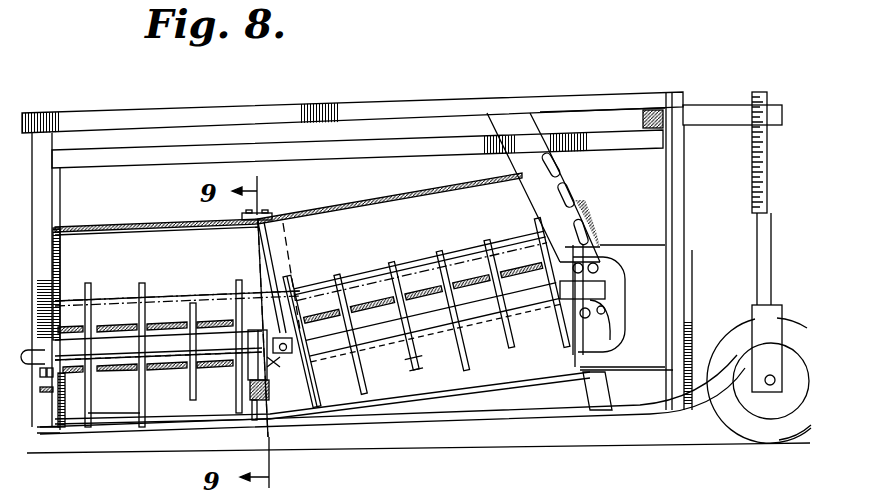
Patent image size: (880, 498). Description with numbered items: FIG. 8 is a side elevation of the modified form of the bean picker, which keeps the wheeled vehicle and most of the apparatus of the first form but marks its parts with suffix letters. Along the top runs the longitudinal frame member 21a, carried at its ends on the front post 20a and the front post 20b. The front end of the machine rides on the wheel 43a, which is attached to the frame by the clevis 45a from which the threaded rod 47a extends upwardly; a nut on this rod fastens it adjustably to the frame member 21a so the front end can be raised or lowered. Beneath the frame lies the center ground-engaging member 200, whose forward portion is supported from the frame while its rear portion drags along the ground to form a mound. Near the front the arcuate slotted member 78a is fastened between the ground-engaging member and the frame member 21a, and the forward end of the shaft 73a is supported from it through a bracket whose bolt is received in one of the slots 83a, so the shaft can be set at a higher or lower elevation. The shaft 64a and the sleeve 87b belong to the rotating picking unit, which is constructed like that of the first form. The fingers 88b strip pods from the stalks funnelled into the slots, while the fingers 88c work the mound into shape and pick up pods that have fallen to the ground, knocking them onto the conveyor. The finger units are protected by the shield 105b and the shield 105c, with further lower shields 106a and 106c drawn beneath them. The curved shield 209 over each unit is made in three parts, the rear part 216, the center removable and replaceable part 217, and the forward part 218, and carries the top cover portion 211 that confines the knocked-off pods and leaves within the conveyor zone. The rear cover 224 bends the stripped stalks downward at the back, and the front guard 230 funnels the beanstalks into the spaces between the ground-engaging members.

The longitudinal frame member 21a is at (422, 108).
The front post 20a is at (678, 204).
The front post 20b is at (43, 250).
The rear cover 224 is at (63, 276).
The top cover portion 211 is at (97, 228).
The rear part 216 is at (162, 238).
The forward part 218 is at (345, 217).
The center removable and replaceable part 217 is at (262, 249).
The shield 105c is at (215, 323).
The lower slat 106c is at (213, 360).
The fingers 88c is at (143, 428).
The fingers 88b is at (492, 248).
The short tine 106a is at (522, 315).
The shield 105b is at (415, 292).
The sleeve 87b is at (398, 345).
The curved shield 209 is at (378, 383).
The center ground-engaging member 200 is at (561, 412).
The arcuate slotted member 78a is at (562, 172).
The slot 83a is at (572, 197).
The guard 230 is at (628, 257).
The shaft 73a is at (612, 285).
The threaded rod 47a is at (762, 243).
The clevis 45a is at (767, 315).
The wheel 43a is at (768, 433).
The shaft 64a is at (32, 363).